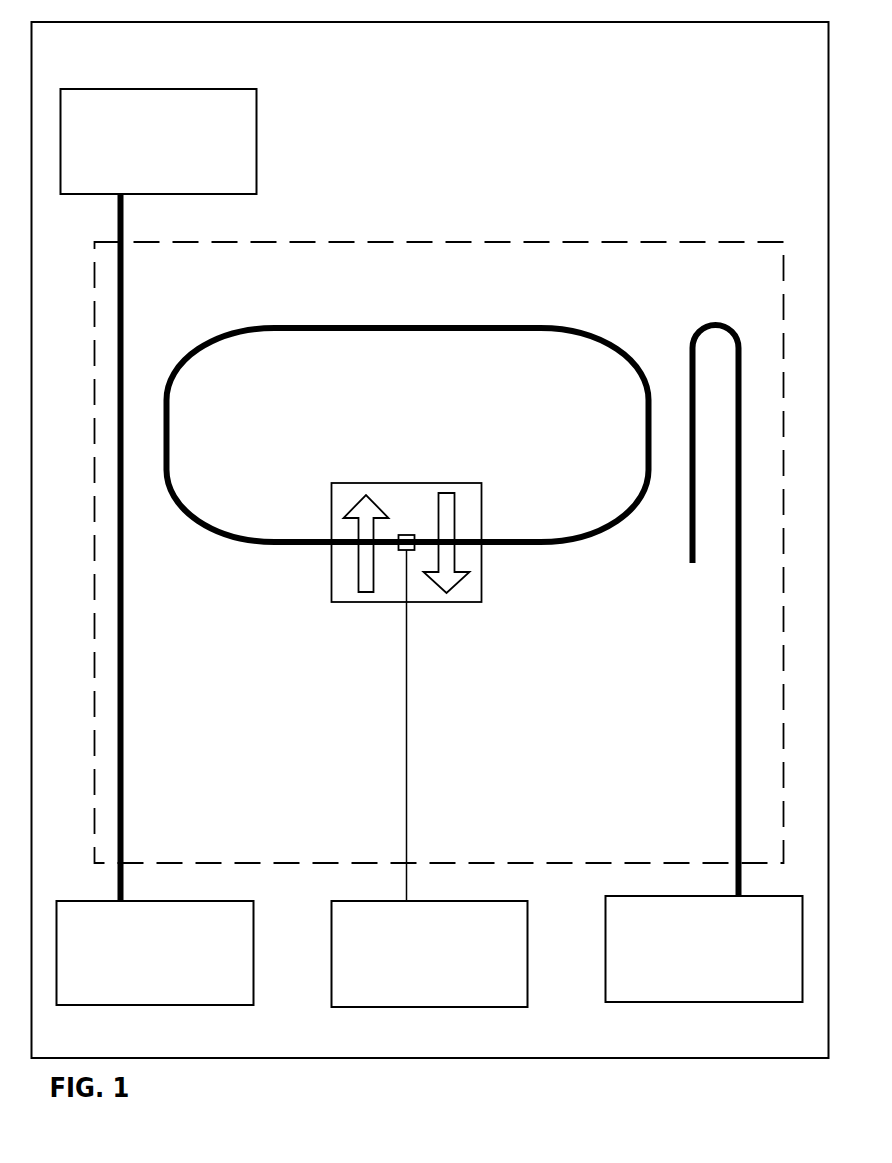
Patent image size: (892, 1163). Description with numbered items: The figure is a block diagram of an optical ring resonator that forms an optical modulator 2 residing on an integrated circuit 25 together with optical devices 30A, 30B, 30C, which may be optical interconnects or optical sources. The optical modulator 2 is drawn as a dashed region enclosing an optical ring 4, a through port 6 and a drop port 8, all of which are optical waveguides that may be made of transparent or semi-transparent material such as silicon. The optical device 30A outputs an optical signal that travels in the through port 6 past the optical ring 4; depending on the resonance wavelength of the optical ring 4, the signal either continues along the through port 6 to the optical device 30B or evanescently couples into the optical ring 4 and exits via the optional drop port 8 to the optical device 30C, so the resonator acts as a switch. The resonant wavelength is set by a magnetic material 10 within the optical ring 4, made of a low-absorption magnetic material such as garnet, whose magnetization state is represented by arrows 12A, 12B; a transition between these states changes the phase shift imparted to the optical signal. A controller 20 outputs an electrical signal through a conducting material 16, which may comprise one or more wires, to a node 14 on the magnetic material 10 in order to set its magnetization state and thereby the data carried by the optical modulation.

The integrated circuit 25 is at (588, 59).
The optical device 30A is at (173, 143).
The optical device 30B is at (170, 953).
The optical device 30C is at (720, 950).
The controller 20 is at (438, 953).
The optical modulator 2 is at (580, 243).
The through port 6 is at (121, 268).
The optical ring 4 is at (475, 325).
The drop port 8 is at (710, 323).
The magnetic material 10 is at (405, 483).
The arrow 12A is at (350, 580).
The arrow 12B is at (458, 510).
The node 14 is at (405, 535).
The conducting material 16 is at (406, 732).